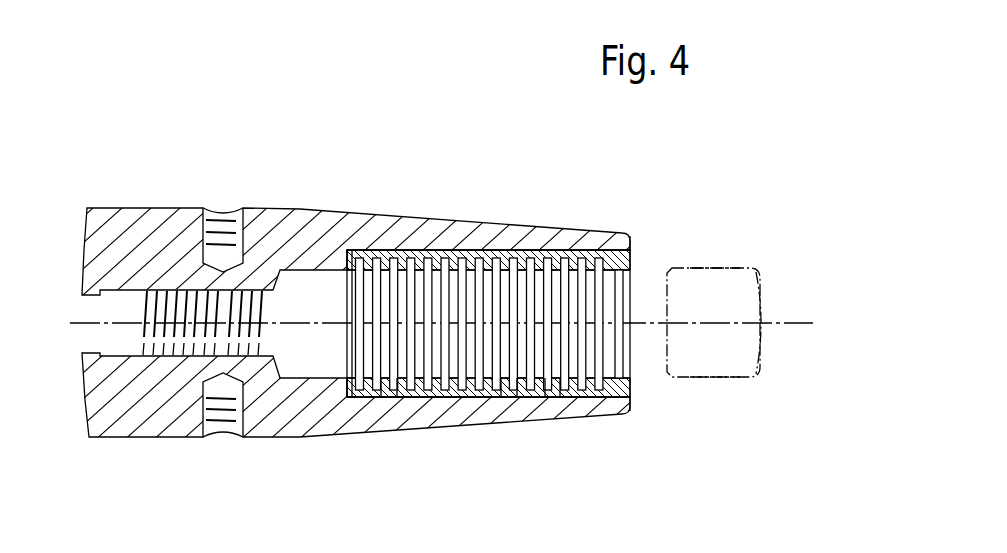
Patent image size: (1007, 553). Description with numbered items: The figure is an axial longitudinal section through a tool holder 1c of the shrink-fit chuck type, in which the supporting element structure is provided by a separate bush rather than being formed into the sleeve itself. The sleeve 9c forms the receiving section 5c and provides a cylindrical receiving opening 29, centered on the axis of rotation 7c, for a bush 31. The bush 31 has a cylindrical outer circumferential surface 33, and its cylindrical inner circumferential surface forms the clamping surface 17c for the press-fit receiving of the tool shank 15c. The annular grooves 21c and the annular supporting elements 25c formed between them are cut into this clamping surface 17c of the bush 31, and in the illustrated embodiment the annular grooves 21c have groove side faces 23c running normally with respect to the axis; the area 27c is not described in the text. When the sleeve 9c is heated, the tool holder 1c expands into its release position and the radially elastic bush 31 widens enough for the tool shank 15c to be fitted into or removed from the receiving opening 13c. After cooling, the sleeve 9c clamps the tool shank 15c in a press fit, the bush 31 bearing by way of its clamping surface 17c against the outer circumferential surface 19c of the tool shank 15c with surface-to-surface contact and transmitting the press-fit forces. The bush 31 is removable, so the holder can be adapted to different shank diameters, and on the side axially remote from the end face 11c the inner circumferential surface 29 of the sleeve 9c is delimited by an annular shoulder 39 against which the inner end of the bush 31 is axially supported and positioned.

The tool holder 1c is at (141, 185).
The receiving section 5c is at (471, 192).
The axis of rotation 7c is at (787, 323).
The sleeve 9c is at (395, 222).
The end face 11c is at (630, 240).
The receiving opening 13c is at (612, 358).
The tool shank 15c is at (723, 260).
The clamping surface 17c is at (488, 365).
The outer circumferential surface 19c is at (716, 380).
The annular grooves 21c is at (552, 382).
The groove side faces 23c is at (548, 248).
The annular supporting elements 25c is at (388, 378).
The disk element 27c is at (420, 370).
The receiving opening 29 is at (450, 252).
The bush 31 is at (488, 246).
The outer circumferential surface 33 is at (522, 252).
The annular shoulder 39 is at (346, 255).